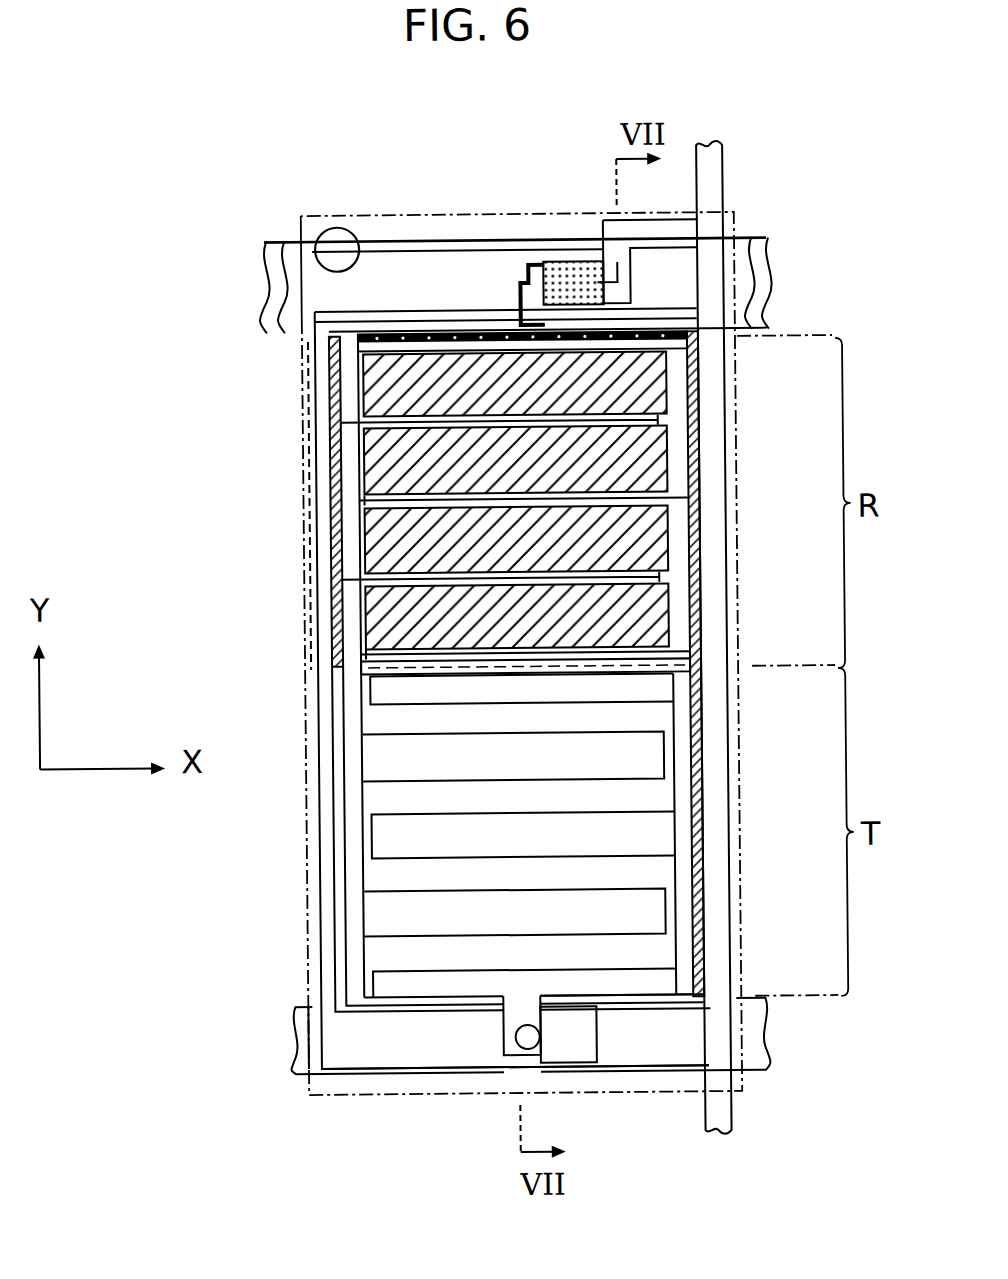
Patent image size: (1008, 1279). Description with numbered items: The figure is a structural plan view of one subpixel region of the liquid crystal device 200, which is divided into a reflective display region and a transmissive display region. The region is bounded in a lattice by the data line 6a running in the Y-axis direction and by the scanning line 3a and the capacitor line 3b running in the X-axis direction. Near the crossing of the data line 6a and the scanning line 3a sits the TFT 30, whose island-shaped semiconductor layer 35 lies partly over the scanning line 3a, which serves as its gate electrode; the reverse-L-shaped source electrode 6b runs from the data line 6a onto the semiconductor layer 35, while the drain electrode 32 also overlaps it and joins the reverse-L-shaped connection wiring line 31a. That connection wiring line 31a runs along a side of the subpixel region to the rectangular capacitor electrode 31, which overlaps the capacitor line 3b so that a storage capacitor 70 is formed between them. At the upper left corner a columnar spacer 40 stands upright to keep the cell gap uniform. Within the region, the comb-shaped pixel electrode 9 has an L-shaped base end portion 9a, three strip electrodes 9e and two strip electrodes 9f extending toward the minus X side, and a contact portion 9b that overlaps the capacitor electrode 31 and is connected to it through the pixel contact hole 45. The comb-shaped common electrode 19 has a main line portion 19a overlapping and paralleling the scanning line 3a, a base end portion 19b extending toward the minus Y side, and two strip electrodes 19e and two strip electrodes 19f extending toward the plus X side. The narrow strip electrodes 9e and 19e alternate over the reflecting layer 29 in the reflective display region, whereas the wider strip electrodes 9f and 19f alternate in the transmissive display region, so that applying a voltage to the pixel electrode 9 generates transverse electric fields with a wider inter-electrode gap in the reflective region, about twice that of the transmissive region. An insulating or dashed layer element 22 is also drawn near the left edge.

The liquid crystal device 200 is at (816, 167).
The data line 6a is at (729, 1124).
The source electrode 6b is at (660, 226).
The scanning line 3a is at (292, 262).
The capacitor line 3b is at (294, 1001).
The common electrode 19 is at (376, 228).
The main line portion 19a is at (303, 332).
The base end portion 19b is at (347, 468).
The strip electrodes 19e is at (662, 421).
The strip electrodes 19f is at (656, 758).
The pixel electrode 9 is at (712, 519).
The base end portion 9a is at (668, 993).
The contact portion 9b is at (500, 1022).
The strip electrodes 9e is at (655, 347).
The strip electrodes 9f is at (372, 686).
The insulating layer 22 is at (306, 366).
The reflecting layer 29 is at (378, 626).
The TFT 30 is at (556, 249).
The capacitor electrode 31 is at (384, 1052).
The connection wiring line 31a is at (461, 316).
The drain electrode 32 is at (530, 263).
The semiconductor layer 35 is at (565, 263).
The columnar spacer 40 is at (340, 243).
The pixel contact hole 45 is at (536, 1045).
The storage capacitor 70 is at (307, 1050).